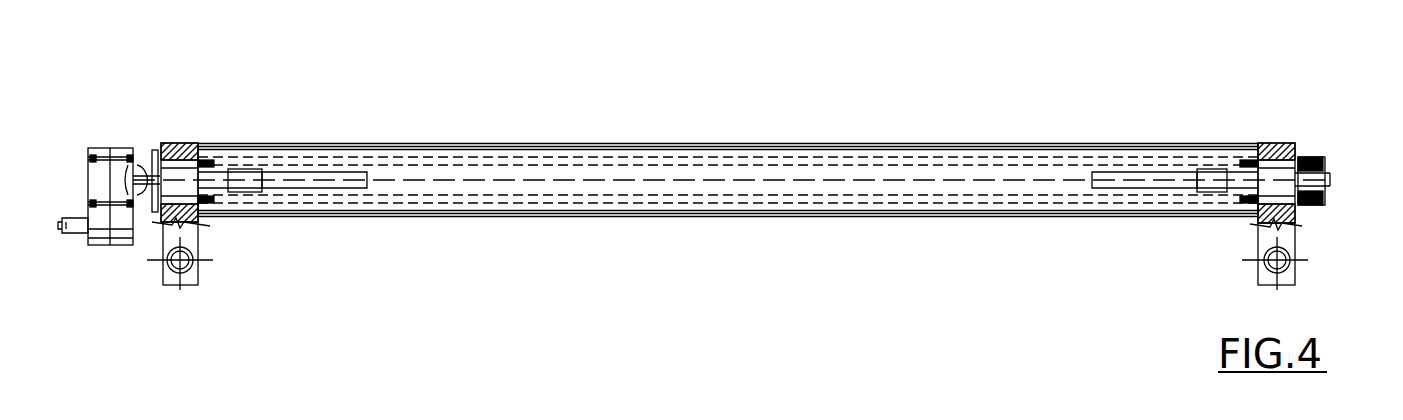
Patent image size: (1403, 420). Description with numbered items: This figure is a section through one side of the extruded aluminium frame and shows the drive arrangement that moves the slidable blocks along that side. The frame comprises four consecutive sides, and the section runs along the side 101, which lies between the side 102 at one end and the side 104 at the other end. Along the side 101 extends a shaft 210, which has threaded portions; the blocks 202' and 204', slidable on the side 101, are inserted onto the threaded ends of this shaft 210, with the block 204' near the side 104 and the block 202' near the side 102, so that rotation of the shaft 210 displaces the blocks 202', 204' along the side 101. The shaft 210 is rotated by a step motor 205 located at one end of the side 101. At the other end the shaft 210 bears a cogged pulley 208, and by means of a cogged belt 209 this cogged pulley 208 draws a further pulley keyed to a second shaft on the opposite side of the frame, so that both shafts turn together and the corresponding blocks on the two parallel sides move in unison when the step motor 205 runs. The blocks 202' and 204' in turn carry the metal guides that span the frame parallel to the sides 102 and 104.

The side of the frame 101 is at (643, 148).
The side of the frame 102 is at (1272, 150).
The side of the frame 104 is at (178, 148).
The block 202' is at (1194, 115).
The block 204' is at (274, 116).
The step motor 205 is at (83, 193).
The cogged pulley 208 is at (1318, 202).
The cogged belt 209 is at (1313, 157).
The shaft 210 is at (838, 180).